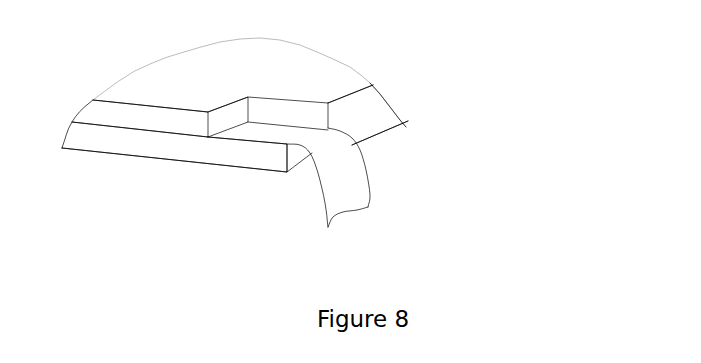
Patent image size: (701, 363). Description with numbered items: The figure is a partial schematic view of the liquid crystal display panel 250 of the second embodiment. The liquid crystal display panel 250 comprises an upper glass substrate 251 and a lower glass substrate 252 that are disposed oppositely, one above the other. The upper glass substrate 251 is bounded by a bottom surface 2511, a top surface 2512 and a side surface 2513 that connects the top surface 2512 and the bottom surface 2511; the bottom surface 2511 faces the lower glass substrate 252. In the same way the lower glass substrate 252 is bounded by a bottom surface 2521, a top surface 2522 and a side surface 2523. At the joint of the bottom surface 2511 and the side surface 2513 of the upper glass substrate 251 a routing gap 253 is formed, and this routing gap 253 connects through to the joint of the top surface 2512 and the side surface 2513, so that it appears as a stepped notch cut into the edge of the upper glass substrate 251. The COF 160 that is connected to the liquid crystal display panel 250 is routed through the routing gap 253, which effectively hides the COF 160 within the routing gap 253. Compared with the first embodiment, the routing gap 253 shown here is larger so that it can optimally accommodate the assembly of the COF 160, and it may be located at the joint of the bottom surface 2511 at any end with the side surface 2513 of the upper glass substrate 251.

The liquid crystal display panel 250 is at (614, 75).
The upper glass substrate 251 is at (573, 43).
The lower glass substrate 252 is at (573, 105).
The top surface 2512 is at (373, 85).
The side surface 2513 is at (378, 95).
The bottom surface 2511 is at (380, 108).
The top surface 2522 is at (461, 123).
The side surface 2523 is at (383, 120).
The bottom surface 2521 is at (380, 133).
The routing gap 253 is at (258, 128).
The COF 160 is at (342, 188).